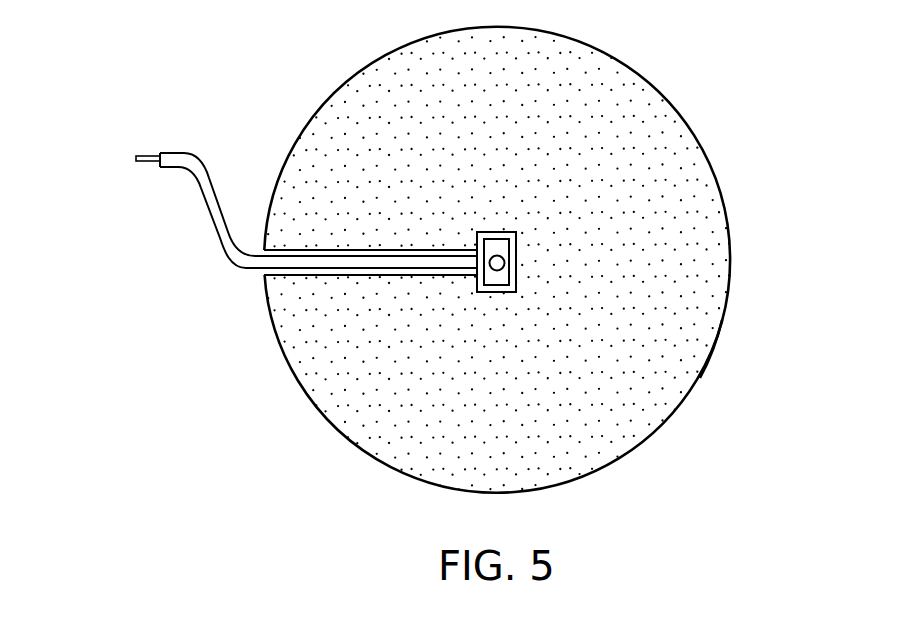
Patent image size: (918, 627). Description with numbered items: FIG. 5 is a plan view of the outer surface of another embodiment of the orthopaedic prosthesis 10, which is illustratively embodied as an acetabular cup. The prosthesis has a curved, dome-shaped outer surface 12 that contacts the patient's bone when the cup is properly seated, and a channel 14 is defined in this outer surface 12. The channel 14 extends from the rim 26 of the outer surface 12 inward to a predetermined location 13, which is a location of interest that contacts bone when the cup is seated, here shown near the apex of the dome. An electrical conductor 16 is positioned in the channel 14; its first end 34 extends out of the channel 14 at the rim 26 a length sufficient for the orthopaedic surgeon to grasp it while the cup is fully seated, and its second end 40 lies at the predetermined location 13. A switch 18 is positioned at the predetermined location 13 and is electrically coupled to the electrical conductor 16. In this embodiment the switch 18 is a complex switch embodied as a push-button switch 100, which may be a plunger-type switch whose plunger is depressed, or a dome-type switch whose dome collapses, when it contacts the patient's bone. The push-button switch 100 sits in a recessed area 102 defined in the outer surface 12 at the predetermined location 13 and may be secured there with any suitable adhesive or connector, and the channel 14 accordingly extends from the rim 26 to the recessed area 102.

The orthopaedic prosthesis 10 is at (723, 70).
The curved outer surface 12 is at (709, 165).
The predetermined location 13 is at (500, 208).
The channel 14 is at (350, 276).
The electrical conductor 16 is at (213, 228).
The switch 18 is at (535, 211).
The rim 26 is at (713, 348).
The first end 34 is at (140, 142).
The second end 40 is at (470, 297).
The push-button switch 100 is at (507, 271).
The recessed area 102 is at (500, 293).